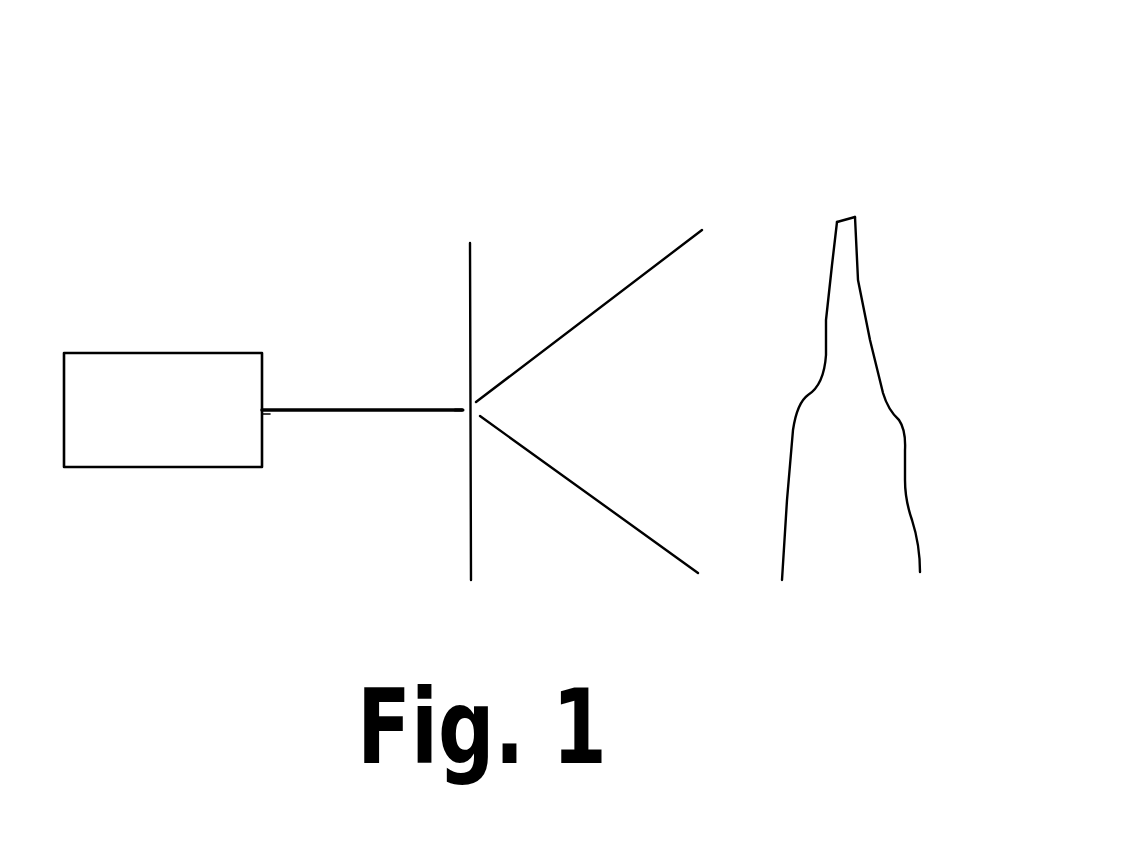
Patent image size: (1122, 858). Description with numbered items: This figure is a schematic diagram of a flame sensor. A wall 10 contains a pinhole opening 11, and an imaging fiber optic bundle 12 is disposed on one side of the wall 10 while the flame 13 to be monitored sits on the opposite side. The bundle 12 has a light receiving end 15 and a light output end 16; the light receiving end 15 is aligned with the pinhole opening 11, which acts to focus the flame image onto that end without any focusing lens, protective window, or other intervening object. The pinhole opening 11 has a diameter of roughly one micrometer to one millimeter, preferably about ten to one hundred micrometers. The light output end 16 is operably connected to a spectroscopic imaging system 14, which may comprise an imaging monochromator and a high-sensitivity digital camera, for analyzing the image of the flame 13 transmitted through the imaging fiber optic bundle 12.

The wall 10 is at (468, 270).
The pinhole opening 11 is at (467, 413).
The imaging fiber optic bundle 12 is at (348, 408).
The flame 13 is at (833, 267).
The spectroscopic imaging system 14 is at (102, 467).
The light receiving end 15 is at (460, 406).
The light output end 16 is at (262, 415).